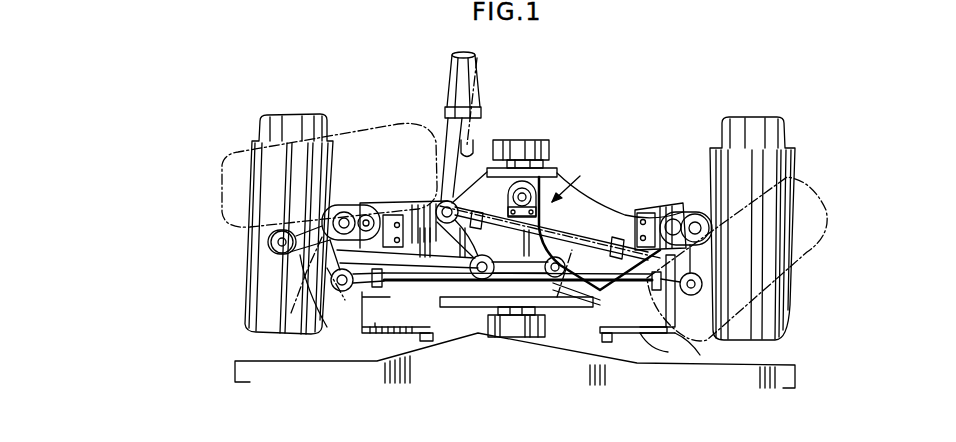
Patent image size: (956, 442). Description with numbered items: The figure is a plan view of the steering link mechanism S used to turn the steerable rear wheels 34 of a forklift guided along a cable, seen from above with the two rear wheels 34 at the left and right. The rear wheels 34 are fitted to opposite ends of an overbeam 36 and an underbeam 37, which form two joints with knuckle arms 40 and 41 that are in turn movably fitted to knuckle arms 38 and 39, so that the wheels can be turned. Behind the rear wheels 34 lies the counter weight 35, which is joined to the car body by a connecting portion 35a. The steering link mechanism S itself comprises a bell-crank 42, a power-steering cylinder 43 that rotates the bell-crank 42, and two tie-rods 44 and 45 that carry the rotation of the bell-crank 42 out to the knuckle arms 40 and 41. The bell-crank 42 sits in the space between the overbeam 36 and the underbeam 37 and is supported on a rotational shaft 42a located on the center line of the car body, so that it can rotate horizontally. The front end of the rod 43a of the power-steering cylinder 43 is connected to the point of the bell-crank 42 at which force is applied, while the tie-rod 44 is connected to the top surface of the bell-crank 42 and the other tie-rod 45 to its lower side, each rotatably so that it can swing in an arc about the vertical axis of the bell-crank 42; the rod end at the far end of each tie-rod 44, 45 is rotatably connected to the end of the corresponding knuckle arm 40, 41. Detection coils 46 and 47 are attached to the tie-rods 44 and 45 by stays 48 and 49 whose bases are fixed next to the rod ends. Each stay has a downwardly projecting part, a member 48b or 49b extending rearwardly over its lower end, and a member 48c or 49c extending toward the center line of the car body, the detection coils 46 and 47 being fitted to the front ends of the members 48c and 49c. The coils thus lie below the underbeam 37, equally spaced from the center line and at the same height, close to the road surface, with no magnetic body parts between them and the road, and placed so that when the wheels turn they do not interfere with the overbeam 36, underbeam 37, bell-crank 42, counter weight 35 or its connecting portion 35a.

The rear wheels 34 is at (273, 117).
The counter weight 35 is at (797, 374).
The connecting portion 35a is at (506, 340).
The overbeam 36 is at (420, 212).
The underbeam 37 is at (597, 217).
The knuckle arm 38 is at (349, 200).
The knuckle arm 39 is at (694, 214).
The knuckle arm 40 is at (272, 238).
The knuckle arm 41 is at (702, 298).
The bell-crank 42 is at (482, 142).
The rotational shaft 42a is at (553, 165).
The power-steering cylinder 43 is at (452, 85).
The rod 43a is at (449, 142).
The tie-rod 44 is at (414, 283).
The tie-rod 45 is at (596, 228).
The detection coil 46 is at (360, 333).
The detection coil 47 is at (557, 297).
The stay 48 is at (291, 313).
The member 48b is at (368, 293).
The member 48c is at (409, 337).
The stay 49 is at (630, 352).
The member 49b is at (678, 338).
The member 49c is at (645, 340).
The steering link mechanism S is at (573, 177).